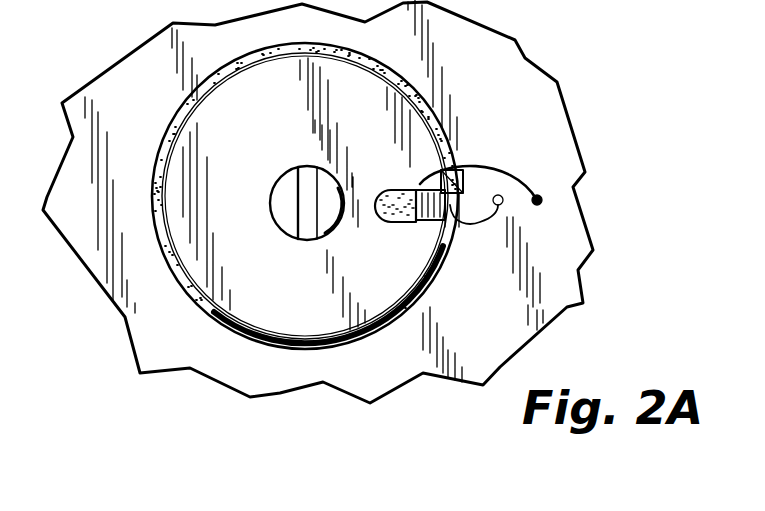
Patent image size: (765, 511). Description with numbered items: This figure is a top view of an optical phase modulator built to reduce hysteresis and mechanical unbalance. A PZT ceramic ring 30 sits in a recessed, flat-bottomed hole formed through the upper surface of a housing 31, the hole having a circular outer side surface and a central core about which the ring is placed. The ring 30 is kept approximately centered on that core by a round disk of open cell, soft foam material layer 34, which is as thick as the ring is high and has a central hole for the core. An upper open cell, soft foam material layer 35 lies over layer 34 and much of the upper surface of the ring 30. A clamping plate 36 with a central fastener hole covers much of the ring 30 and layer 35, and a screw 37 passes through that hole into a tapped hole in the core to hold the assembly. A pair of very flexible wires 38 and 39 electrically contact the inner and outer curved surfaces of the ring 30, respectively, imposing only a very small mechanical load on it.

The PZT ceramic ring 30 is at (452, 245).
The housing 31 is at (157, 342).
The open cell soft foam material layer 34 is at (383, 222).
The upper open cell soft foam material layer 35 is at (177, 118).
The clamping plate 36 is at (280, 290).
The screw 37 is at (283, 185).
The flexible wire 38 is at (477, 167).
The flexible wire 39 is at (487, 223).